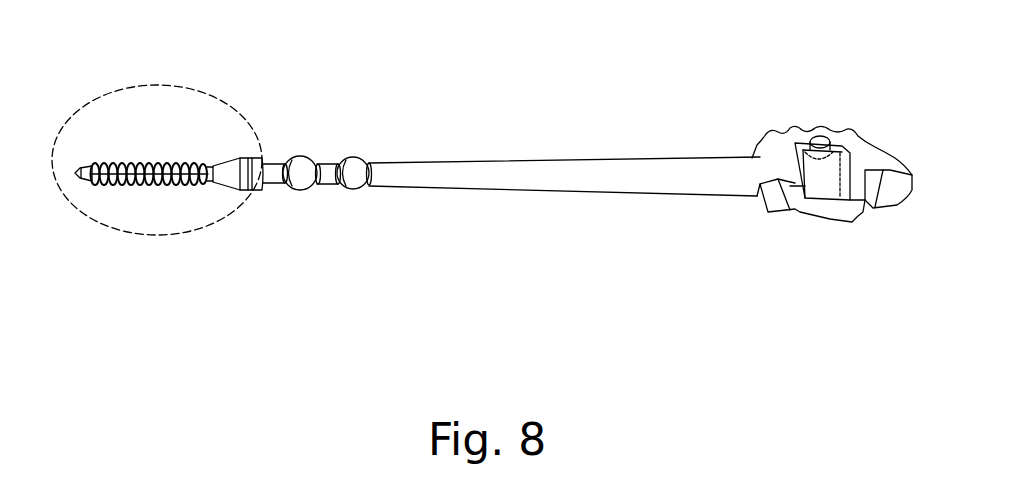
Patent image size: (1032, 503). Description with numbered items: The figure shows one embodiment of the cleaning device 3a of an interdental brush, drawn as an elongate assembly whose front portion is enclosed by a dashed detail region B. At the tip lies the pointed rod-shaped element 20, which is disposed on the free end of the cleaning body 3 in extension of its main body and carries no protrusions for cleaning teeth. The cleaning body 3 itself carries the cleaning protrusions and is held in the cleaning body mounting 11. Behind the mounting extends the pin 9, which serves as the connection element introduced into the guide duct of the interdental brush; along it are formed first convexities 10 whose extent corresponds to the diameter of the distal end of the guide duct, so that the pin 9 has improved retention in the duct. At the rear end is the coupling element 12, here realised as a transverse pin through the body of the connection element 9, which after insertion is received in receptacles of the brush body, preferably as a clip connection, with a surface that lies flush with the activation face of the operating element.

The detail region B is at (177, 129).
The cleaning body 3 is at (128, 170).
The cleaning device 3a is at (392, 3).
The pin 9 is at (552, 180).
The first convexities 10 is at (308, 180).
The cleaning body mounting 11 is at (234, 178).
The coupling element 12 is at (818, 135).
The pointed rod-shaped element 20 is at (88, 180).